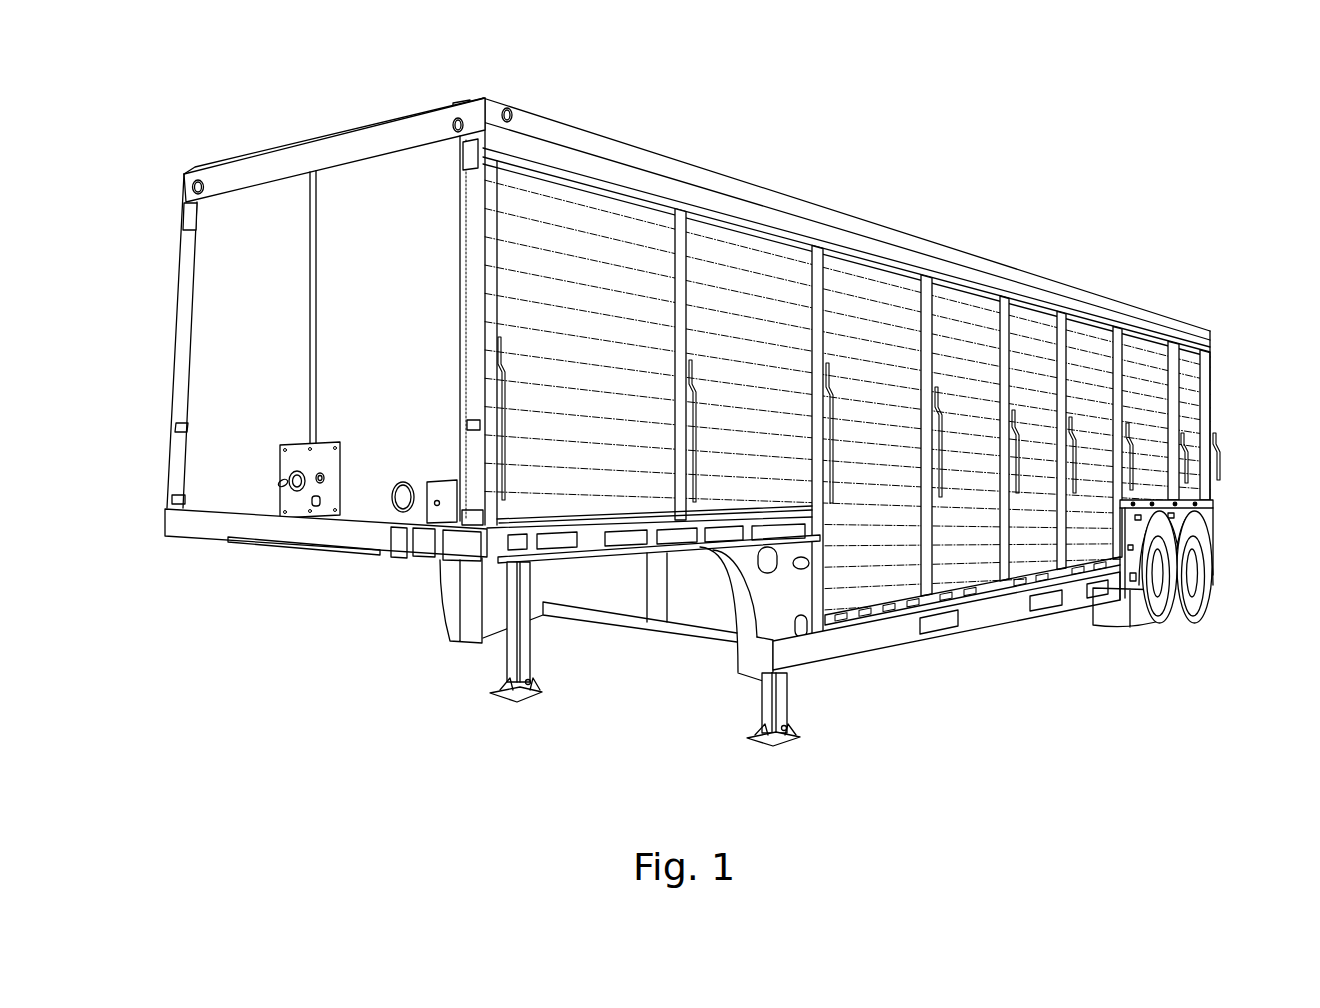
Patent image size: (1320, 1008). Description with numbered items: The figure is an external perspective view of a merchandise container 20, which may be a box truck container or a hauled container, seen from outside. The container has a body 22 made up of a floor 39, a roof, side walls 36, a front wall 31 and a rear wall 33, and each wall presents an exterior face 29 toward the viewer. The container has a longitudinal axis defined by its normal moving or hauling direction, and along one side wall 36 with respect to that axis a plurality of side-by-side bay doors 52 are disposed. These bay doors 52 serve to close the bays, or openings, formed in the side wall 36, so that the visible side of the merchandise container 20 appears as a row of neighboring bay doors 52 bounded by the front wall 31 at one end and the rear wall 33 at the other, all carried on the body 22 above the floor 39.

The merchandise container 20 is at (236, 132).
The body 22 is at (187, 372).
The exterior face 29 is at (415, 140).
The front wall 31 is at (265, 503).
The rear wall 33 is at (1218, 361).
The side wall 36 is at (1062, 610).
The floor 39 is at (938, 657).
The bay door 52 is at (580, 452).